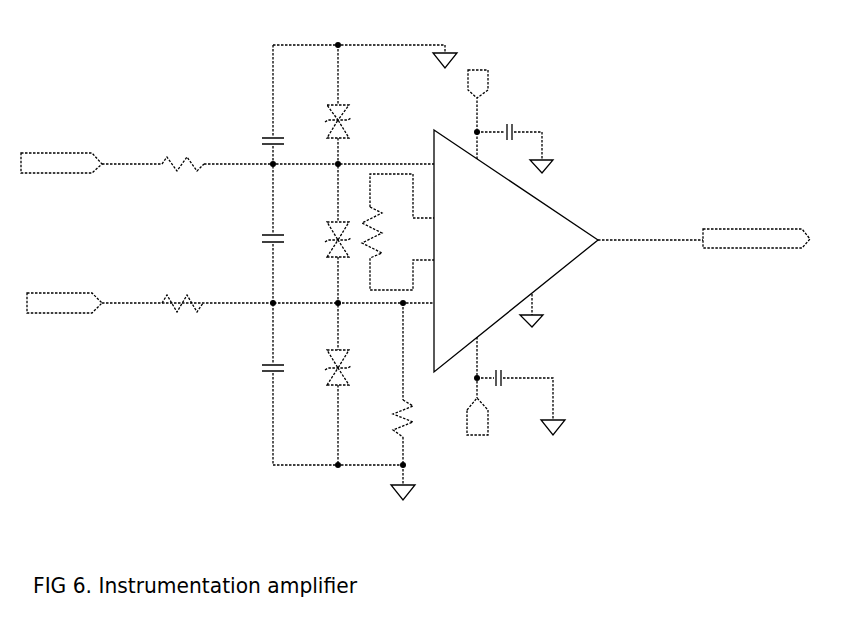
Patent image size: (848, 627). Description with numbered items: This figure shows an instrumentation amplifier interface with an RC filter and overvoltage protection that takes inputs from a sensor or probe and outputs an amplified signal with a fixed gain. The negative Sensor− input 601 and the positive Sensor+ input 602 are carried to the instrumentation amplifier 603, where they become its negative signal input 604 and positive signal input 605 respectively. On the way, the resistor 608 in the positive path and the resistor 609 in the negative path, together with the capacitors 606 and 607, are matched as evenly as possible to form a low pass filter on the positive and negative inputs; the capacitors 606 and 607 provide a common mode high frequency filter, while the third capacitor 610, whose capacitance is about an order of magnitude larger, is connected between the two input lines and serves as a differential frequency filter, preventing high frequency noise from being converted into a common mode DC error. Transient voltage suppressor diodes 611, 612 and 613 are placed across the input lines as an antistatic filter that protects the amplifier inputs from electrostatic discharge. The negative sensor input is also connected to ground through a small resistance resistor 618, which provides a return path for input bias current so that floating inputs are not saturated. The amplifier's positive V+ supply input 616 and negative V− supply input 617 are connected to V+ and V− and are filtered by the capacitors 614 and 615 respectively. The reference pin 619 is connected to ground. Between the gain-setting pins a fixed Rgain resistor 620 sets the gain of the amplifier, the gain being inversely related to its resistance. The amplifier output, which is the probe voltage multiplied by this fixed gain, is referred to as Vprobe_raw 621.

The Sensor− input 601 is at (90, 293).
The Sensor+ input 602 is at (88, 153).
The instrumentation amplifier 603 is at (563, 208).
The negative signal input 604 is at (437, 300).
The positive signal input 605 is at (436, 168).
The capacitor 606 is at (283, 130).
The capacitor 607 is at (283, 357).
The resistor 608 is at (181, 160).
The resistor 609 is at (197, 292).
The third capacitor 610 is at (283, 227).
The transient voltage suppressor diode 611 is at (348, 98).
The transient voltage suppressor diode 612 is at (348, 220).
The transient voltage suppressor diode 613 is at (358, 347).
The capacitor 614 is at (508, 368).
The capacitor 615 is at (508, 110).
The positive V+ supply input 616 is at (486, 437).
The negative V− supply input 617 is at (488, 68).
The small resistance resistor 618 is at (413, 421).
The reference pin 619 is at (532, 270).
The Rgain resistor 620 is at (381, 249).
The Vprobe_raw output 621 is at (733, 228).